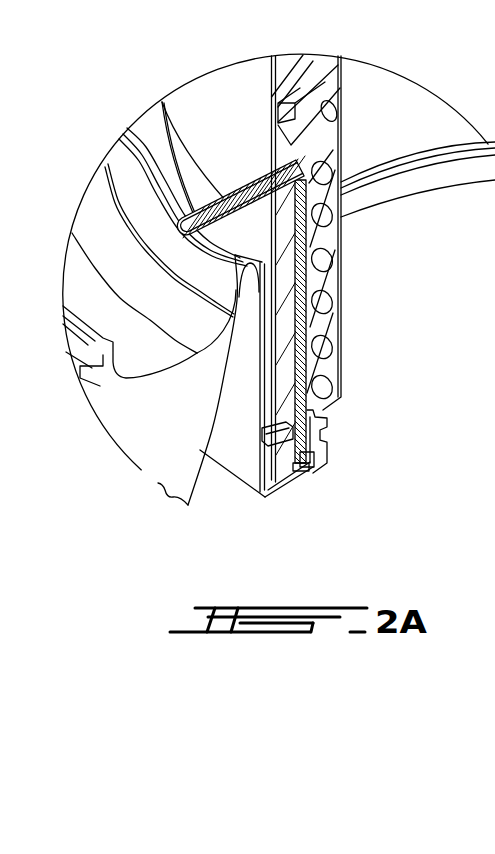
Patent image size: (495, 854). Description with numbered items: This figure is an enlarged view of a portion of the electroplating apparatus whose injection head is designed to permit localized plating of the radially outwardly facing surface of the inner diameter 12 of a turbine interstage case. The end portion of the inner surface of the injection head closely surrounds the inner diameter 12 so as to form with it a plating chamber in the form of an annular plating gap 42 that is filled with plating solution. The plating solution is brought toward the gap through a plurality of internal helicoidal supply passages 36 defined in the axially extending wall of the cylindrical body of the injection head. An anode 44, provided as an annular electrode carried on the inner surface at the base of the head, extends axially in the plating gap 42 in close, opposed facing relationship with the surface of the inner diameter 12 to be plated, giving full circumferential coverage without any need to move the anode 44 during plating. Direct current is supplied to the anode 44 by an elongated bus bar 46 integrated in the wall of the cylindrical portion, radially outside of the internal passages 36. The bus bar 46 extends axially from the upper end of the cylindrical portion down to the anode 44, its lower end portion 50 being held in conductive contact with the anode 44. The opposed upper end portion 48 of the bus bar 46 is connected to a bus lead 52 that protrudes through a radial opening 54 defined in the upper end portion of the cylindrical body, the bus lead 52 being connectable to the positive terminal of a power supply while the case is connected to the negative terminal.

The inner diameter 12 is at (320, 440).
The internal helicoidal supply passages 36 is at (322, 260).
The annular plating gap 42 is at (323, 412).
The anode 44 is at (318, 453).
The bus bar 46 is at (297, 307).
The upper end portion 48 is at (338, 152).
The lower end portion 50 is at (310, 465).
The bus lead 52 is at (162, 102).
The radial opening 54 is at (268, 169).